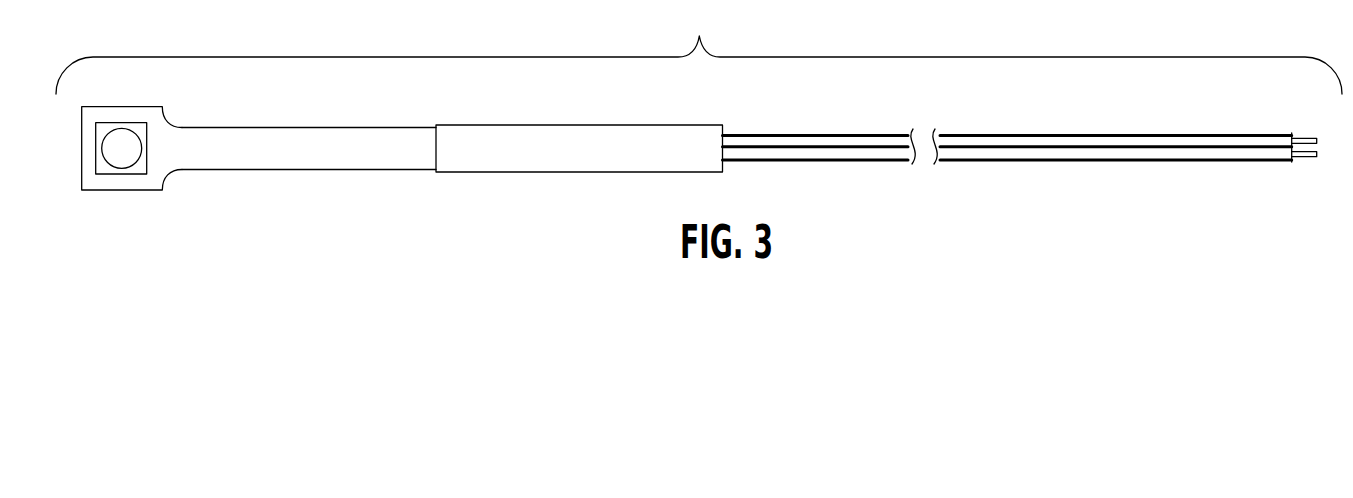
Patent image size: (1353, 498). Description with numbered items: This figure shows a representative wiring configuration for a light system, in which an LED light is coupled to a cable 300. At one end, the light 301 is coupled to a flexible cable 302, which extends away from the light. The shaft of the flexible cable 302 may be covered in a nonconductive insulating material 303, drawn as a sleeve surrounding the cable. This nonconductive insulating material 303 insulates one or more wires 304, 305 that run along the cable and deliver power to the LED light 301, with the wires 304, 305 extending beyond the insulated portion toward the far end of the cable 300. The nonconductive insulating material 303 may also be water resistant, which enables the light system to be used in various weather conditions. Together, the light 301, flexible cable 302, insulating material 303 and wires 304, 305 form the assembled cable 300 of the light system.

The cable 300 is at (699, 47).
The light 301 is at (130, 125).
The flexible cable 302 is at (323, 170).
The nonconductive insulating material 303 is at (542, 172).
The wire 304 is at (863, 160).
The wire 305 is at (1287, 160).